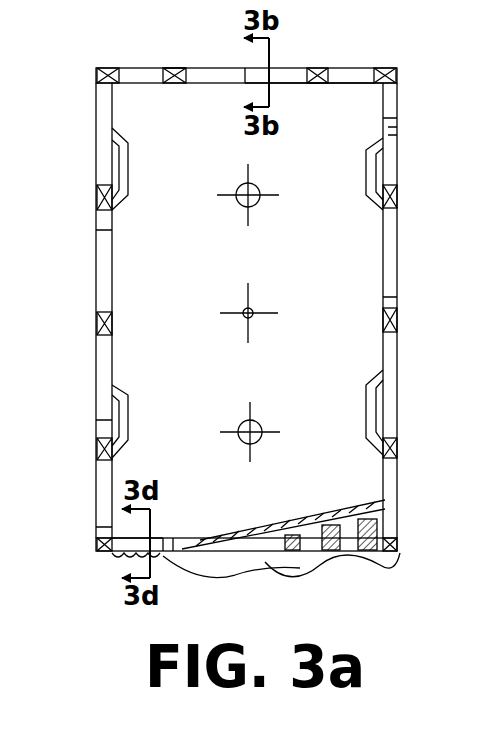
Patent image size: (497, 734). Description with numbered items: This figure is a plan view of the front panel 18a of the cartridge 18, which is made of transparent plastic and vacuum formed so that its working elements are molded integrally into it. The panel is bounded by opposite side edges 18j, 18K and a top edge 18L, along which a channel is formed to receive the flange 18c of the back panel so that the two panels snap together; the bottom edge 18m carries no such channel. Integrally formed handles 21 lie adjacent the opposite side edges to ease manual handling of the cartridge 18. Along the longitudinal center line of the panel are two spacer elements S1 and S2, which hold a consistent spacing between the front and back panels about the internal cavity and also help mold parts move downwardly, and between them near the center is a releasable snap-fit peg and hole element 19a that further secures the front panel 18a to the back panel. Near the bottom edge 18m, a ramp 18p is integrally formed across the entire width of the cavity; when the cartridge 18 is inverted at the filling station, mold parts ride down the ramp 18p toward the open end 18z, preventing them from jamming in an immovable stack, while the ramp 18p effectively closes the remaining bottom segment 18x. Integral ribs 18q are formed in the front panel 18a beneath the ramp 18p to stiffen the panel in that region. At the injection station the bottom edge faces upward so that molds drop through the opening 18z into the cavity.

The cartridge 18 is at (296, 309).
The top edge 18L is at (197, 67).
The front panel 18a is at (345, 100).
The side edge 18K is at (398, 353).
The side edge 18j is at (97, 380).
The handles 21 is at (118, 170).
The spacer element S1 is at (252, 200).
The spacer element S2 is at (252, 436).
The snap-fit peg and hole element 19a is at (252, 318).
The ramp 18p is at (338, 512).
The integral ribs 18q is at (397, 520).
The flange 18c is at (153, 537).
The open end 18z is at (110, 565).
The bottom edge 18m is at (233, 577).
The bottom segment 18x is at (305, 570).